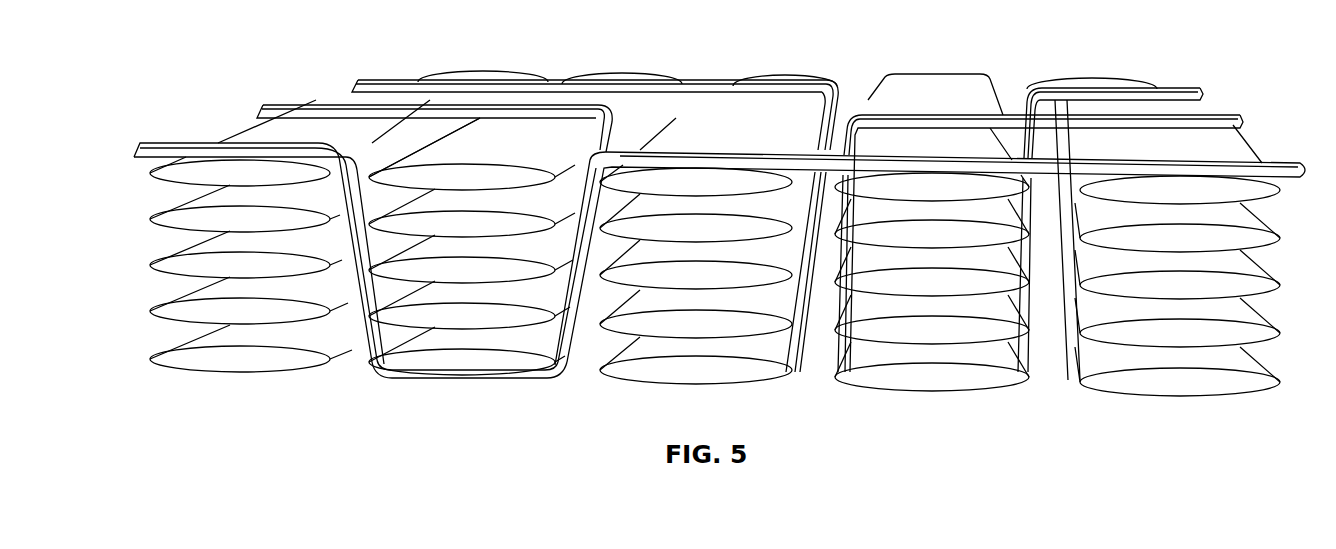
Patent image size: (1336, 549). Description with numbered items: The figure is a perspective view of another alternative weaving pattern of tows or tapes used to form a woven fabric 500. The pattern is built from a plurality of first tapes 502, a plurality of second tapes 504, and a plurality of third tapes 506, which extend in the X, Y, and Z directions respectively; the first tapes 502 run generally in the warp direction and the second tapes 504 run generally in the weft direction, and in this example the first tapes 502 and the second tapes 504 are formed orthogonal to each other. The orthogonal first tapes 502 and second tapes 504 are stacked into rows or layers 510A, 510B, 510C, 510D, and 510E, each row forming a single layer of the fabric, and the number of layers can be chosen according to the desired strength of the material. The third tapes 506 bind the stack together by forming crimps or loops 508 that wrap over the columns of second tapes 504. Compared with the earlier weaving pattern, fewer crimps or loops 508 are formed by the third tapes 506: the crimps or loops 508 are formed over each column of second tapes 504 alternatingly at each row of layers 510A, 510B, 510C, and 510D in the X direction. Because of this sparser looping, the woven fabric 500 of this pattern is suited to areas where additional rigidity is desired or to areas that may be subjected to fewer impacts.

The woven fabric 500 is at (758, 125).
The first tapes 502 is at (817, 185).
The second tapes 504 is at (487, 143).
The third tapes 506 is at (260, 150).
The crimps or loops 508 is at (493, 378).
The layer 510A is at (207, 173).
The layer 510B is at (177, 222).
The layer 510C is at (177, 268).
The layer 510D is at (177, 313).
The fifth layer 510E is at (177, 362).